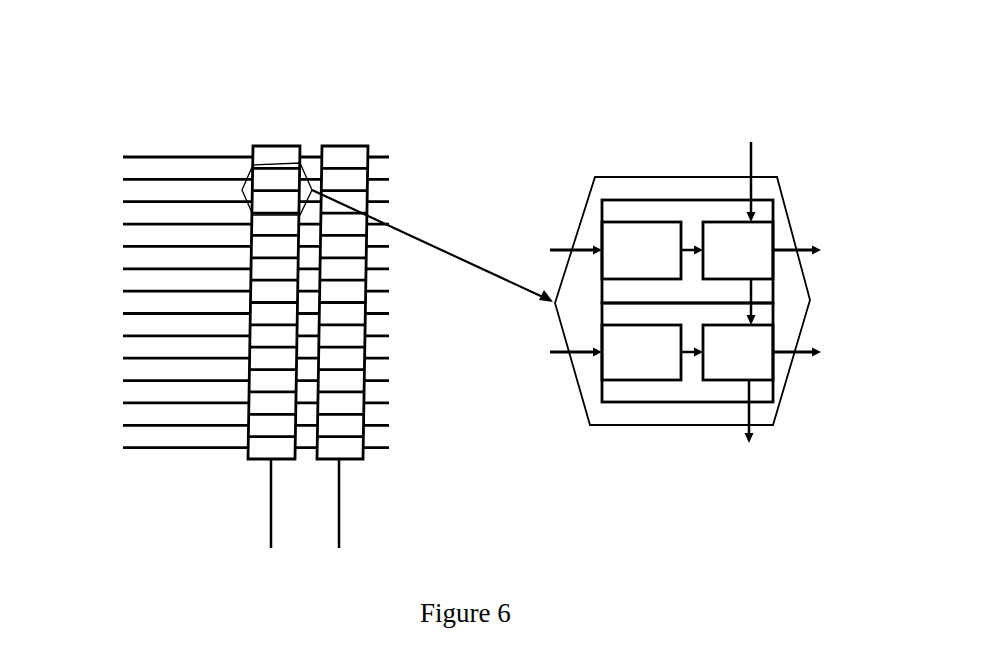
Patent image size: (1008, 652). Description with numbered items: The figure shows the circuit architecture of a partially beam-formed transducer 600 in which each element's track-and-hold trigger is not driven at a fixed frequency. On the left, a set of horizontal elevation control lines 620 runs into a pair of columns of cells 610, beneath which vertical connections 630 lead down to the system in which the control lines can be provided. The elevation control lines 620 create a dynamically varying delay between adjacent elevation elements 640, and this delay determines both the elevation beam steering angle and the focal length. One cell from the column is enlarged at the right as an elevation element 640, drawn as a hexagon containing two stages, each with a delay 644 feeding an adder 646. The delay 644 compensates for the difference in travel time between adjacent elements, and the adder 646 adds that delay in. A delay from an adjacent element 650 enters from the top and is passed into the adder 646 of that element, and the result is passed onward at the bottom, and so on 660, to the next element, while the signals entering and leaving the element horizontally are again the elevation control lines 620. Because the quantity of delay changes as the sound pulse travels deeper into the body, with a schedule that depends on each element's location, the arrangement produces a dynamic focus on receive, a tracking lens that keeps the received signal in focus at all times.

The partially beam-formed transducer 600 is at (124, 90).
The interconnect switch column array 610 is at (308, 280).
The elevation control lines 620 is at (475, 302).
The system 630 is at (305, 518).
The elevation element 640 is at (682, 293).
The delay 644 is at (641, 301).
The adder 646 is at (738, 301).
The delay from an adjacent element 650 is at (753, 217).
The passing of the delay onward 660 is at (747, 428).